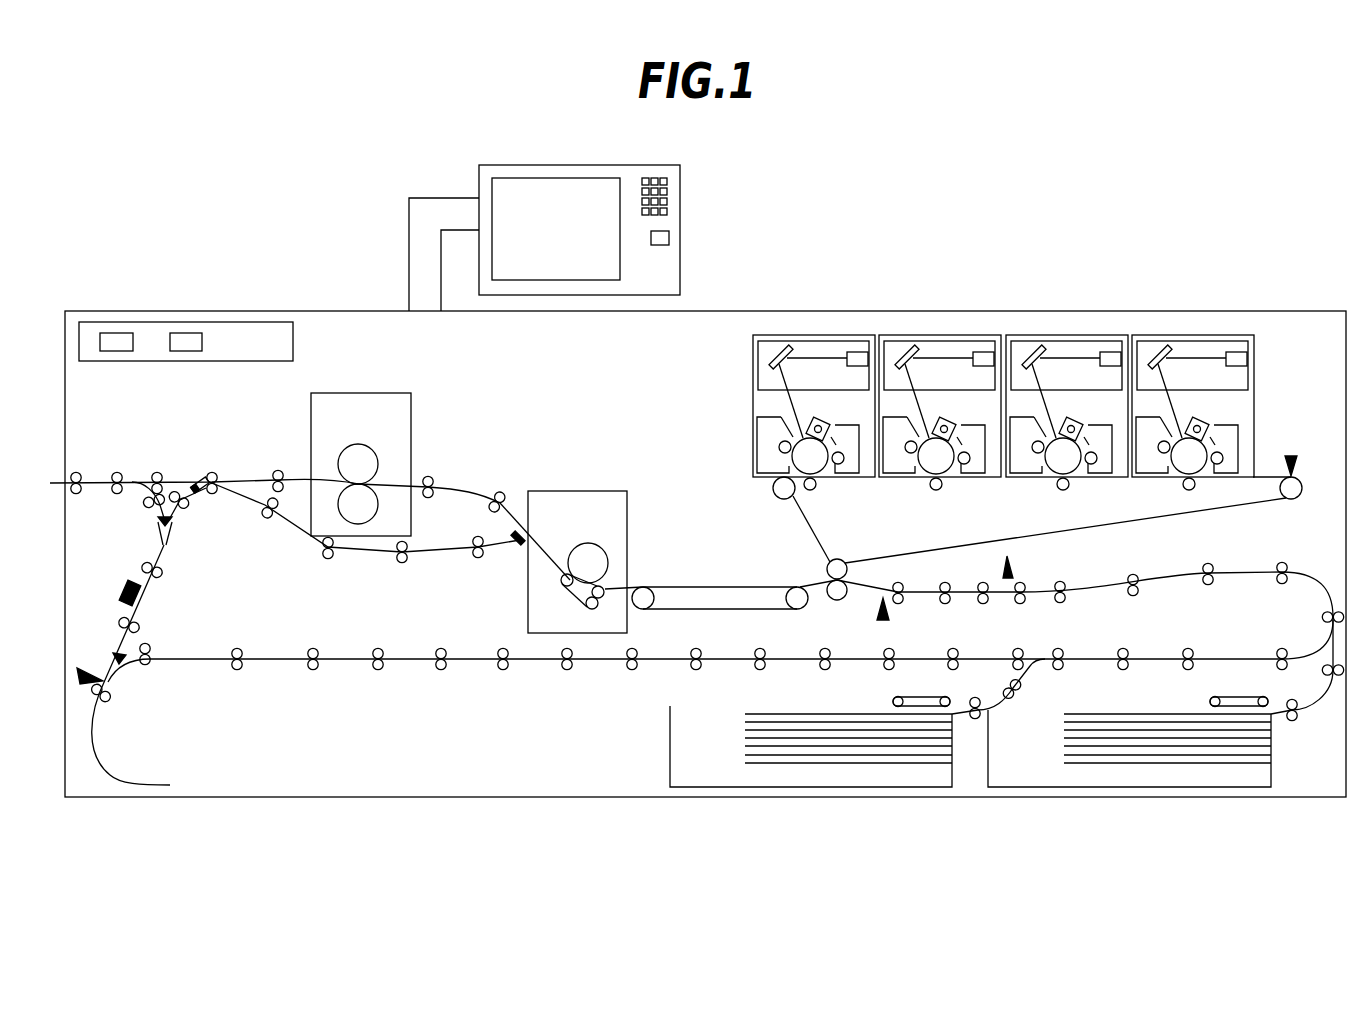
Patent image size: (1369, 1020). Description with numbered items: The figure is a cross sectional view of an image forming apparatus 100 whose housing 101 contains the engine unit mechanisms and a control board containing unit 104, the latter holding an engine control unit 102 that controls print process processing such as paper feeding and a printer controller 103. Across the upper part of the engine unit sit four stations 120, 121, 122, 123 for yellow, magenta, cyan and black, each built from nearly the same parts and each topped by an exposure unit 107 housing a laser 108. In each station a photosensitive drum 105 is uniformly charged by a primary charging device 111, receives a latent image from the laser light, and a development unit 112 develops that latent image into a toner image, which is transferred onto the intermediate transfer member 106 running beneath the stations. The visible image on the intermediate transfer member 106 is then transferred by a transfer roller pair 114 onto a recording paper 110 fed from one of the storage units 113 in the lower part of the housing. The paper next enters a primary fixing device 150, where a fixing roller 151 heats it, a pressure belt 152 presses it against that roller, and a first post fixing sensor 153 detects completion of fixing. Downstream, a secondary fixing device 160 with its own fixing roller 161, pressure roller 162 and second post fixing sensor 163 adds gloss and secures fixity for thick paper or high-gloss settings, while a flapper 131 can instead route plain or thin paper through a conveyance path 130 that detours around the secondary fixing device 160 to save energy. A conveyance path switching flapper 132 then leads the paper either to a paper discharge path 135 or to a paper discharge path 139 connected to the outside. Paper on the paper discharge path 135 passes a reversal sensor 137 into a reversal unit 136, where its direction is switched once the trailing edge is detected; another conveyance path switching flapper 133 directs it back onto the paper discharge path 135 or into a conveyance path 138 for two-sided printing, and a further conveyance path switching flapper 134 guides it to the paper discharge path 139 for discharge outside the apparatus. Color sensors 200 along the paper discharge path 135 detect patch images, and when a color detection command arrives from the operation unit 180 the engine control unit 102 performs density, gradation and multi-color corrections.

The image forming apparatus 100 is at (1213, 161).
The housing 101 is at (1283, 311).
The engine control unit 102 is at (115, 333).
The printer controller 103 is at (187, 333).
The control board containing unit 104 is at (247, 322).
The photosensitive drum 105 is at (828, 478).
The intermediate transfer member 106 is at (923, 556).
The exposure unit 107 is at (826, 335).
The laser 108 is at (860, 342).
The recording paper 110 is at (790, 714).
The primary charging device 111 is at (792, 424).
The development unit 112 is at (760, 455).
The storage unit 113 is at (670, 738).
The transfer roller pair 114 is at (843, 600).
The station 120 is at (788, 366).
The station 121 is at (938, 335).
The station 122 is at (1066, 335).
The station 123 is at (1180, 335).
The conveyance path 130 is at (365, 552).
The flapper 131 is at (517, 547).
The conveyance path switching flapper 132 is at (197, 481).
The conveyance path switching flapper 133 is at (120, 670).
The conveyance path switching flapper 134 is at (172, 524).
The paper discharge path 135 is at (152, 582).
The reversal unit 136 is at (122, 773).
The reversal sensor 137 is at (88, 668).
The conveyance path 138 is at (275, 655).
The paper discharge path 139 is at (97, 480).
The primary fixing device 150 is at (604, 491).
The fixing roller 151 is at (590, 543).
The pressure belt 152 is at (578, 602).
The first post fixing sensor 153 is at (548, 537).
The secondary fixing device 160 is at (380, 393).
The fixing roller 161 is at (366, 444).
The pressure roller 162 is at (380, 507).
The second post fixing sensor 163 is at (323, 452).
The operation unit 180 is at (479, 178).
The color sensor 200 is at (125, 582).